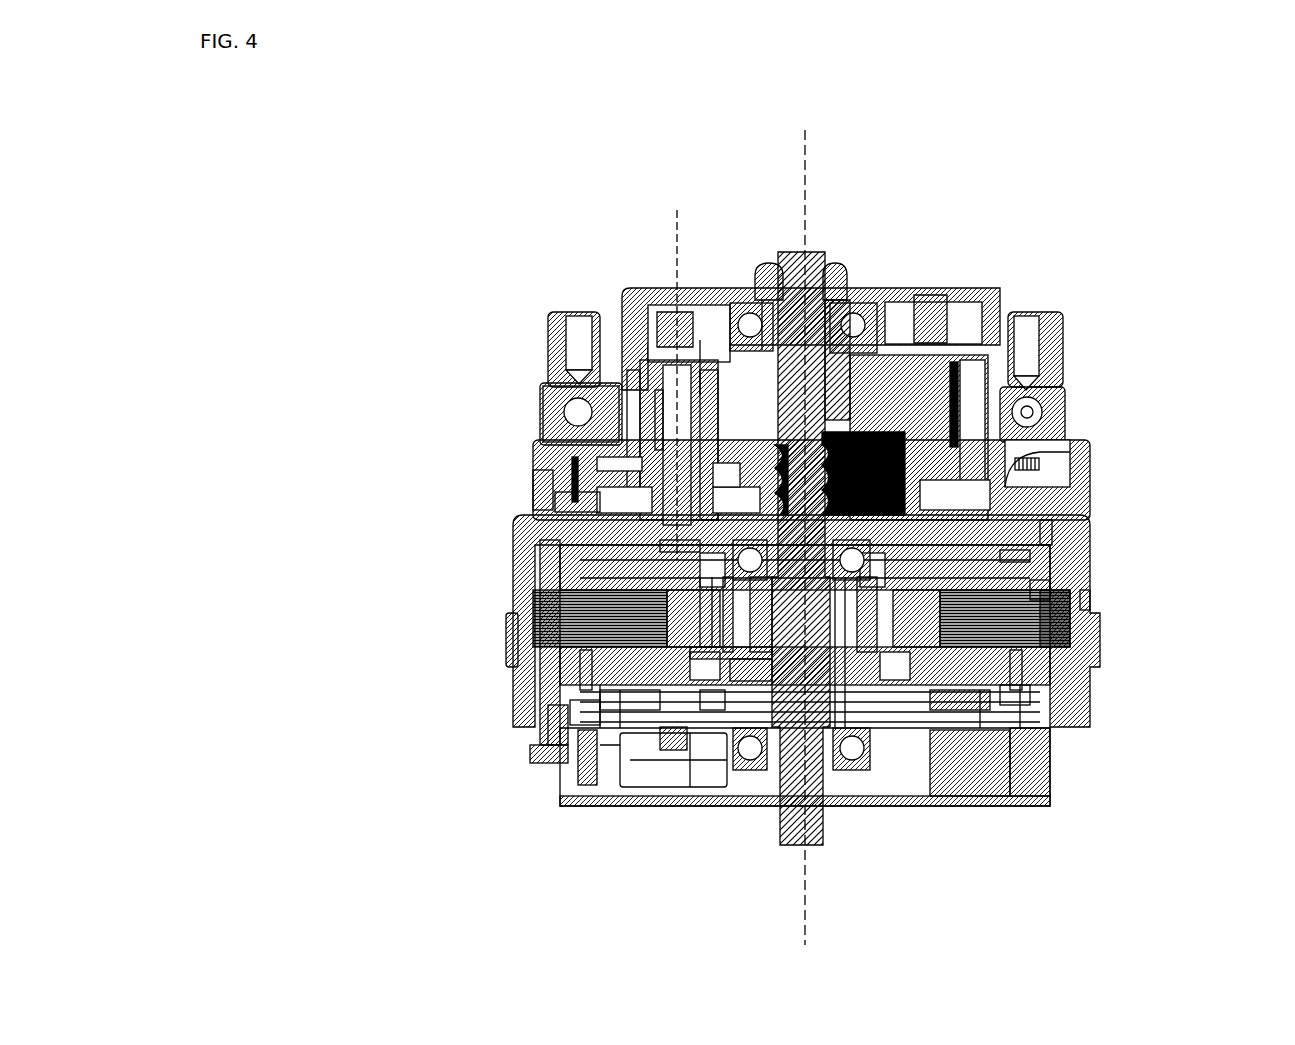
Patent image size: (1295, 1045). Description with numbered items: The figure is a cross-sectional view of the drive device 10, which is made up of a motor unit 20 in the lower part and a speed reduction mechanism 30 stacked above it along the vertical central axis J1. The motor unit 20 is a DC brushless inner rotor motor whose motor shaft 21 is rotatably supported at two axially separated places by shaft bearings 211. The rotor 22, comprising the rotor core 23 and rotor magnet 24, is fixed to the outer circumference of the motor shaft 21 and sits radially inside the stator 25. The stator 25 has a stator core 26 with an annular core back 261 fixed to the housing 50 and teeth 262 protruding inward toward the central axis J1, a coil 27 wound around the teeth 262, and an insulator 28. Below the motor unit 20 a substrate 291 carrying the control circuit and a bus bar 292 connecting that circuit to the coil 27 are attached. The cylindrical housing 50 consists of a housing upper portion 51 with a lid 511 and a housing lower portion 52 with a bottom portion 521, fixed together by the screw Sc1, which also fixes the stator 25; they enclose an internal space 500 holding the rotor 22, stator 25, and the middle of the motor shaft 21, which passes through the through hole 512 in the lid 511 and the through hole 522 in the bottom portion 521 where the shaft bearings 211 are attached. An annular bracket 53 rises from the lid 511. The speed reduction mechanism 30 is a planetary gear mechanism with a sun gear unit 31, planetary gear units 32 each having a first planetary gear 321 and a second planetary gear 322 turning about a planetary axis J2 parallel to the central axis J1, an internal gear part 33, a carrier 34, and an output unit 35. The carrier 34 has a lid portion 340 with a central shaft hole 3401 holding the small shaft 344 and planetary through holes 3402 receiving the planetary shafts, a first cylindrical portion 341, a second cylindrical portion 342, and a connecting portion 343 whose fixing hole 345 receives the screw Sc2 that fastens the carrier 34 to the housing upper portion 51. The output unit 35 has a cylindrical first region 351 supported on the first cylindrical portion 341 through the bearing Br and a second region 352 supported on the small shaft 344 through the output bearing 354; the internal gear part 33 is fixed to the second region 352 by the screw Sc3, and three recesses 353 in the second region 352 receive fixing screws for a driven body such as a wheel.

The drive device 10 is at (744, 514).
The motor unit 20 is at (748, 532).
The motor shaft 21 is at (780, 825).
The shaft bearing 211 is at (1025, 628).
The rotor 22 is at (660, 780).
The rotor core 23 is at (855, 760).
The rotor magnet 24 is at (930, 740).
The stator 25 is at (616, 700).
The stator core 26 is at (560, 690).
The core back 261 is at (520, 627).
The teeth 262 is at (1010, 690).
The coil 27 is at (612, 740).
The insulator 28 is at (580, 720).
The substrate 291 is at (955, 700).
The bus bar 292 is at (1020, 695).
The speed reduction mechanism 30 is at (764, 322).
The sun gear unit 31 is at (900, 470).
The planetary gear unit 32 is at (640, 420).
The first planetary gear 321 is at (560, 506).
The second planetary gear 322 is at (650, 410).
The internal gear part 33 is at (630, 400).
The carrier 34 is at (850, 420).
The lid portion 340 is at (885, 355).
The shaft hole 3401 is at (762, 300).
The planetary through hole 3402 is at (700, 335).
The first cylindrical portion 341 is at (542, 408).
The second cylindrical portion 342 is at (535, 478).
The connecting portion 343 is at (540, 445).
The small shaft 344 is at (838, 262).
The fixing hole 345 is at (1039, 464).
The output unit 35 is at (945, 400).
The first region 351 is at (540, 400).
The second region 352 is at (670, 390).
The recess 353 is at (578, 340).
The output bearing 354 is at (748, 315).
The housing 50 is at (1105, 665).
The internal space 500 is at (1085, 600).
The housing upper portion 51 is at (1040, 590).
The lid 511 is at (1030, 555).
The through hole 512 is at (512, 545).
The housing lower portion 52 is at (1065, 695).
The bottom portion 521 is at (715, 700).
The through hole 522 is at (800, 830).
The bracket 53 is at (512, 512).
The bearing Br is at (1068, 402).
The central axis J1 is at (808, 145).
The planetary axis J2 is at (652, 375).
The screw Sc1 is at (570, 715).
The screw Sc2 is at (1050, 530).
The screw Sc3 is at (682, 345).